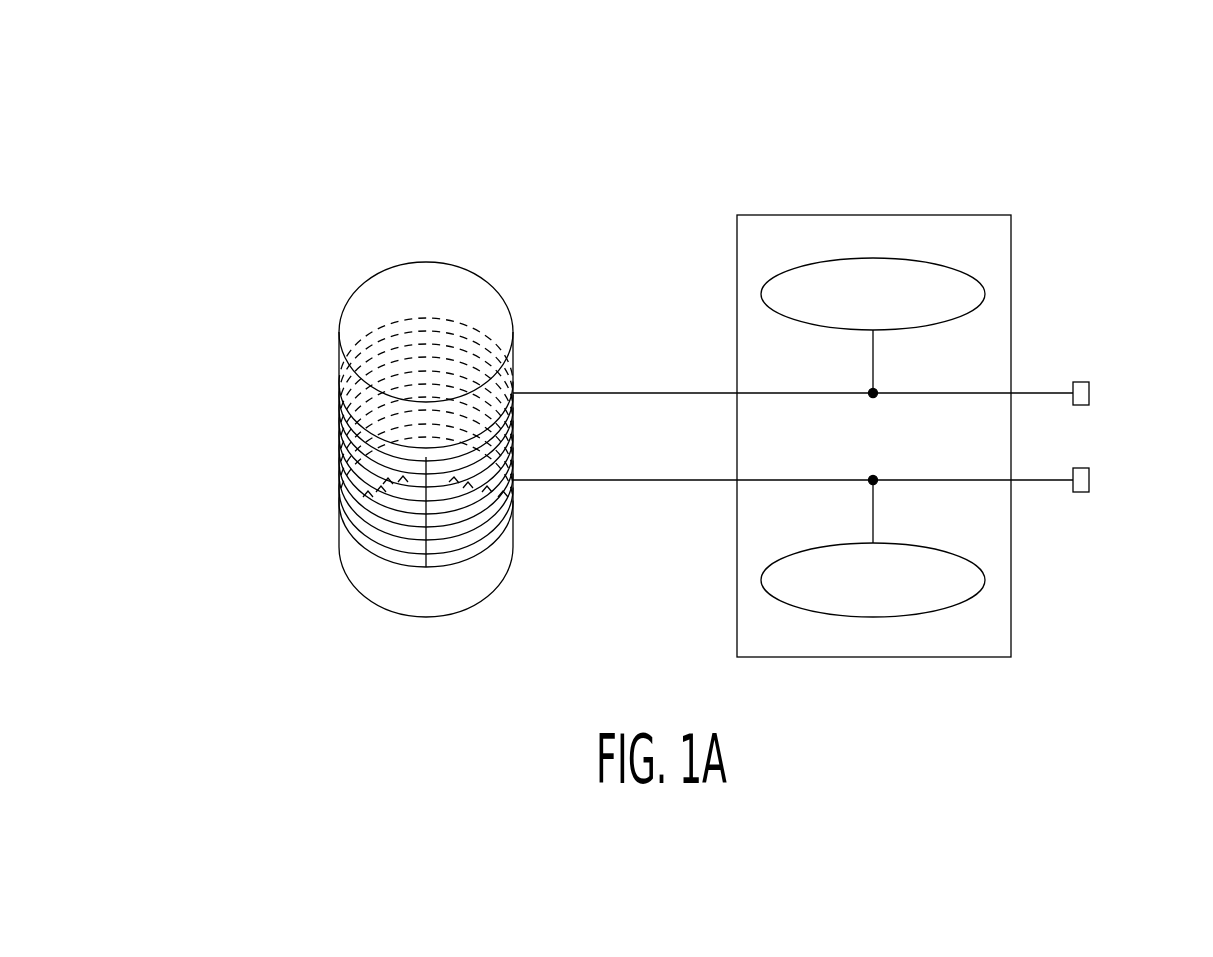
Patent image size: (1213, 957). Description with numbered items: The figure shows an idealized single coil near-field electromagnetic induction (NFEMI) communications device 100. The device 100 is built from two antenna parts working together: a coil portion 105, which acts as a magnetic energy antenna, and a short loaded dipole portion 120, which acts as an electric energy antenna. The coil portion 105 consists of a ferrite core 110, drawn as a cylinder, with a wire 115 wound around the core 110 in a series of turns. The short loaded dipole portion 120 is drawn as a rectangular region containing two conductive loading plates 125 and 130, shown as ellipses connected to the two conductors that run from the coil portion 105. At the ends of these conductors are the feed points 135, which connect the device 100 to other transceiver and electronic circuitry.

The single coil near-field electromagnetic induction communications device 100 is at (411, 137).
The coil portion 105 is at (299, 190).
The ferrite core 110 is at (357, 291).
The wire 115 is at (340, 488).
The short loaded dipole portion 120 is at (938, 215).
The conductive loading plate 125 is at (985, 287).
The conductive loading plate 130 is at (986, 583).
The feed points 135 is at (1089, 397).